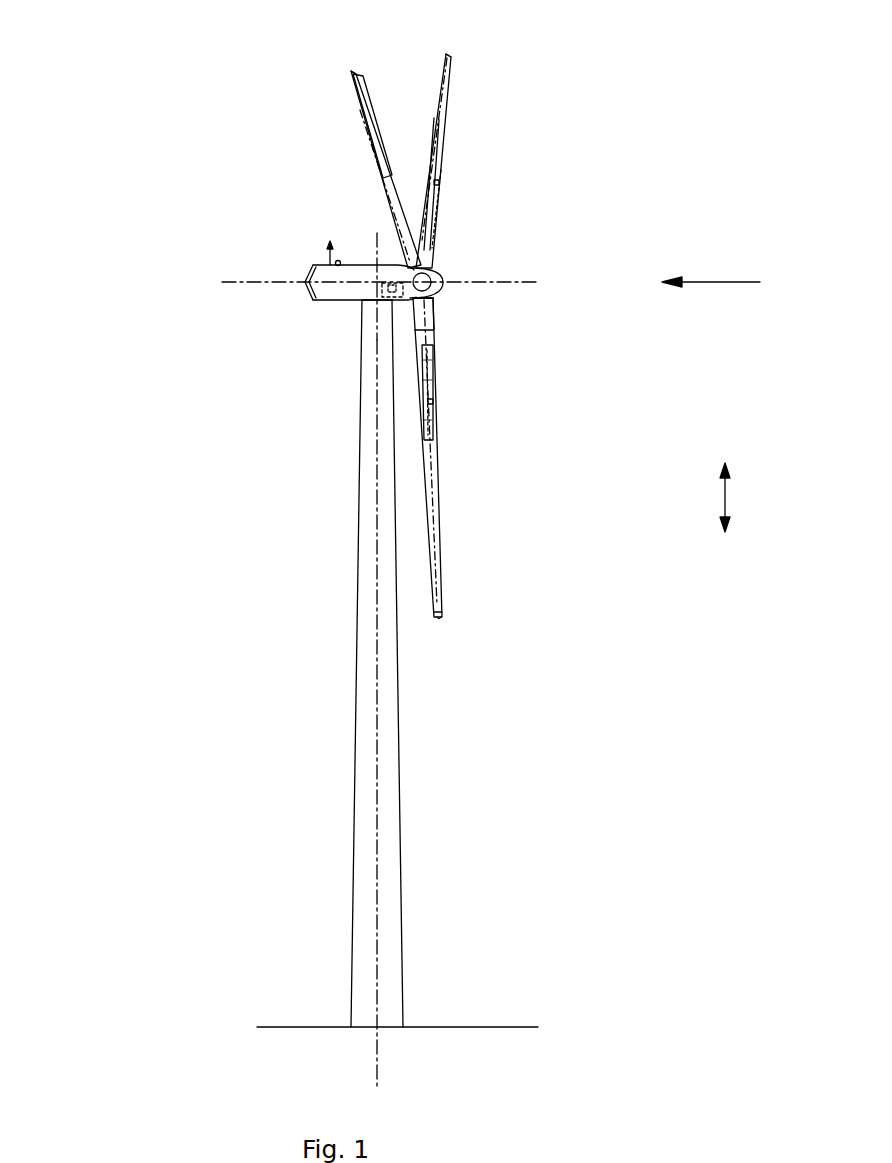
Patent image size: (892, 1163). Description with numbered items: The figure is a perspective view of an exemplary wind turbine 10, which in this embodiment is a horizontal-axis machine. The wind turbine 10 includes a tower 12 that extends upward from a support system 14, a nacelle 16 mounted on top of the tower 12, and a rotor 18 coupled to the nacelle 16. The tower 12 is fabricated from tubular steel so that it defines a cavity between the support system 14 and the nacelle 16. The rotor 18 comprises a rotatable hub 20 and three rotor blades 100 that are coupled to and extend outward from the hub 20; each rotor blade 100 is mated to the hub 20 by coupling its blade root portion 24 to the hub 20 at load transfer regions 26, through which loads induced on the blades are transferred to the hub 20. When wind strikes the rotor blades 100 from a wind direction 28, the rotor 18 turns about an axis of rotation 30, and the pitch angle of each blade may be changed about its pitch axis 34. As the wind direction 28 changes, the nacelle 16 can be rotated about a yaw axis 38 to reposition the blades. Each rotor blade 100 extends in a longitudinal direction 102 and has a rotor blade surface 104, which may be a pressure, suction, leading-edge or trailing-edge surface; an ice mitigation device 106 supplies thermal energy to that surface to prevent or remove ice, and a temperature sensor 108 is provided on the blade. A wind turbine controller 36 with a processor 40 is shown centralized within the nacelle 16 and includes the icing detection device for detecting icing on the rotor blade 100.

The wind turbine 10 is at (148, 78).
The tower 12 is at (355, 808).
The support system 14 is at (311, 1027).
The nacelle 16 is at (332, 300).
The rotor 18 is at (532, 240).
The rotatable hub 20 is at (441, 278).
The blade root portion 24 is at (434, 318).
The load transfer regions 26 is at (436, 298).
The wind direction 28 is at (728, 282).
The axis of rotation 30 is at (508, 284).
The pitch axes 34 is at (345, 80).
The wind turbine controller 36 is at (370, 332).
The yaw axis 38 is at (382, 703).
The processor 40 is at (385, 248).
The rotor blade 100 is at (371, 137).
The longitudinal direction 102 is at (728, 503).
The rotor blade surface 104 is at (445, 118).
The ice mitigation device 106 is at (438, 203).
The temperature sensor 108 is at (441, 183).